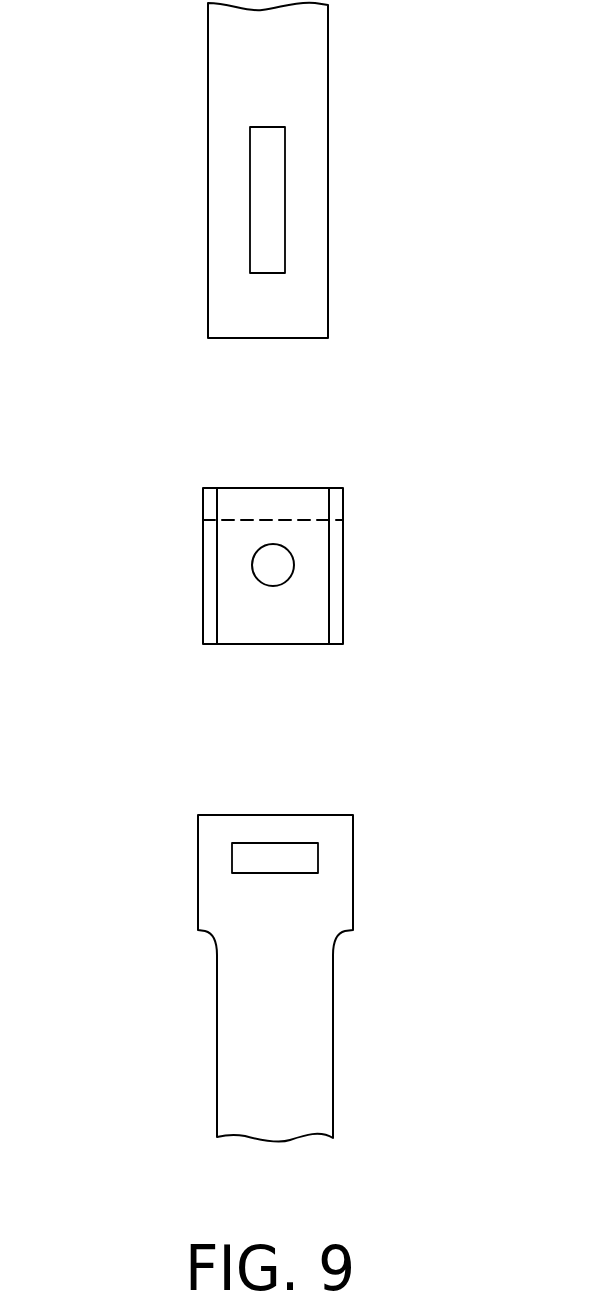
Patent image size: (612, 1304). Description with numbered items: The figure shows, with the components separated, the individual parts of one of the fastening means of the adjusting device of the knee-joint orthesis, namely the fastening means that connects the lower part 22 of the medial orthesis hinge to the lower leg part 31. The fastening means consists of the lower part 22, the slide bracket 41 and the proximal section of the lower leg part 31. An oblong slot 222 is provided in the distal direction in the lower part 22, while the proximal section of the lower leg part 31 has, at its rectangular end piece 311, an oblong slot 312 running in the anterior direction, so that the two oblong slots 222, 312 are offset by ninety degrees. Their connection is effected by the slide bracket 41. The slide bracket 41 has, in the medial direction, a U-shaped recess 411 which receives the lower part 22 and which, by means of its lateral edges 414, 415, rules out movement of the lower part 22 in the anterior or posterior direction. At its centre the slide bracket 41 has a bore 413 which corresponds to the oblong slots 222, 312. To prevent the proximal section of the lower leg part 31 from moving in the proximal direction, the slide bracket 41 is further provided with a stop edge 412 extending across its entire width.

The lower part 22 is at (235, 42).
The oblong slot 222 is at (267, 193).
The slide bracket 41 is at (207, 557).
The U-shaped recess 411 is at (270, 527).
The stop edge 412 is at (245, 500).
The bore 413 is at (278, 558).
The lateral edge 414 is at (207, 618).
The lateral edge 415 is at (335, 620).
The lower leg part 31 is at (260, 1070).
The rectangular end piece 311 is at (333, 855).
The oblong slot 312 is at (248, 860).